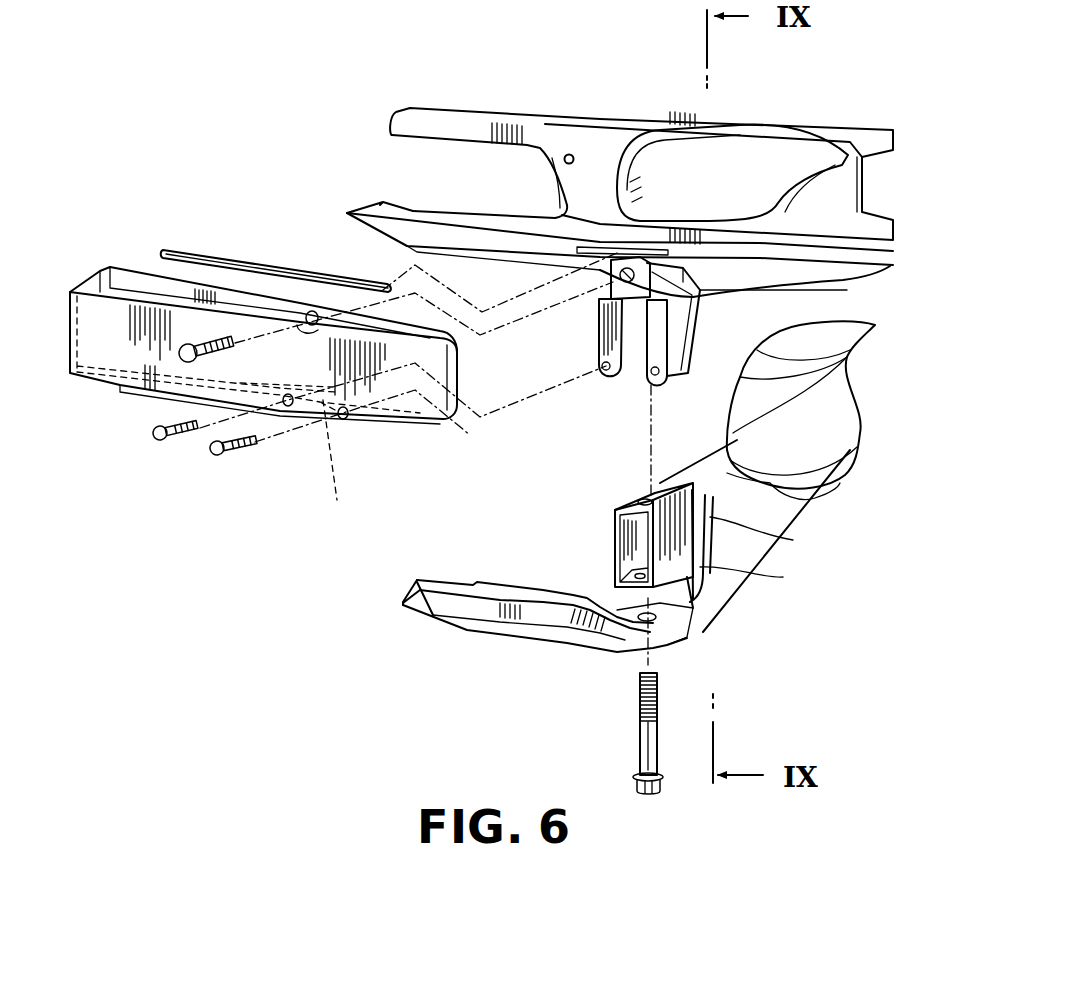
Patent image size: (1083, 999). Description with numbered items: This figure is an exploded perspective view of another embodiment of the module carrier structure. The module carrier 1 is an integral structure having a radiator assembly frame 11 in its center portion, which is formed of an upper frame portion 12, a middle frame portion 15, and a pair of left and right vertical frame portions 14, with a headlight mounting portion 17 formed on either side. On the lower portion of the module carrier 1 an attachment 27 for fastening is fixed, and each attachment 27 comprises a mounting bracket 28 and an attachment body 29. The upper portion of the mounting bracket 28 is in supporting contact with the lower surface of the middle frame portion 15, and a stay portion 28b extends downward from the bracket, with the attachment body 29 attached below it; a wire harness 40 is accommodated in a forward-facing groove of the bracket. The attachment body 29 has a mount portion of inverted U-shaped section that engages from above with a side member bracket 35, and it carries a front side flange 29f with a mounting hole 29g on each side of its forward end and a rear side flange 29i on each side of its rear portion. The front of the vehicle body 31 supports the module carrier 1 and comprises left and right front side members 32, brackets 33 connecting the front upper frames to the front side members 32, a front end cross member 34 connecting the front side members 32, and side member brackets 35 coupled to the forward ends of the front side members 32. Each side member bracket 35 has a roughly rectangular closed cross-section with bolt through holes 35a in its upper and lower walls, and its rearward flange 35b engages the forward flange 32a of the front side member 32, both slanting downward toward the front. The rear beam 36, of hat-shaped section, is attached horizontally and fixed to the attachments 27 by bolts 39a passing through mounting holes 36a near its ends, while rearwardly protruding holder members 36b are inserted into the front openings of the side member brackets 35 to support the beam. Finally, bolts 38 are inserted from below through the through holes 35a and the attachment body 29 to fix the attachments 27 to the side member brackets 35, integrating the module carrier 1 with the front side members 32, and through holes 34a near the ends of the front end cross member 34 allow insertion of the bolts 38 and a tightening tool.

The module carrier 1 is at (527, 108).
The radiator assembly frame 11 is at (447, 163).
The upper frame portion 12 is at (476, 125).
The vertical frame portions 14 is at (573, 142).
The middle frame portion 15 is at (547, 223).
The headlight mounting portion 17 is at (755, 167).
The attachment 27 is at (592, 411).
The mounting bracket 28 is at (611, 257).
The stay portion 28b is at (645, 262).
The attachment body 29 is at (760, 296).
The front side flange 29f is at (657, 363).
The mounting hole 29g is at (600, 366).
The rear side flange 29i is at (685, 334).
The front of the vehicle body 31 is at (746, 604).
The front side member 32 is at (704, 470).
The flange 32a is at (793, 540).
The bracket 33 is at (790, 490).
The front end cross member 34 is at (492, 617).
The through hole 34a is at (683, 637).
The side member bracket 35 is at (632, 540).
The bolt through hole 35a is at (641, 497).
The flange 35b is at (783, 577).
The rear beam 36 is at (96, 348).
The mounting hole 36a is at (310, 313).
The holder member 36b is at (326, 469).
The bolt 38 is at (645, 740).
The bolt 39a is at (185, 343).
The wire harness 40 is at (235, 258).